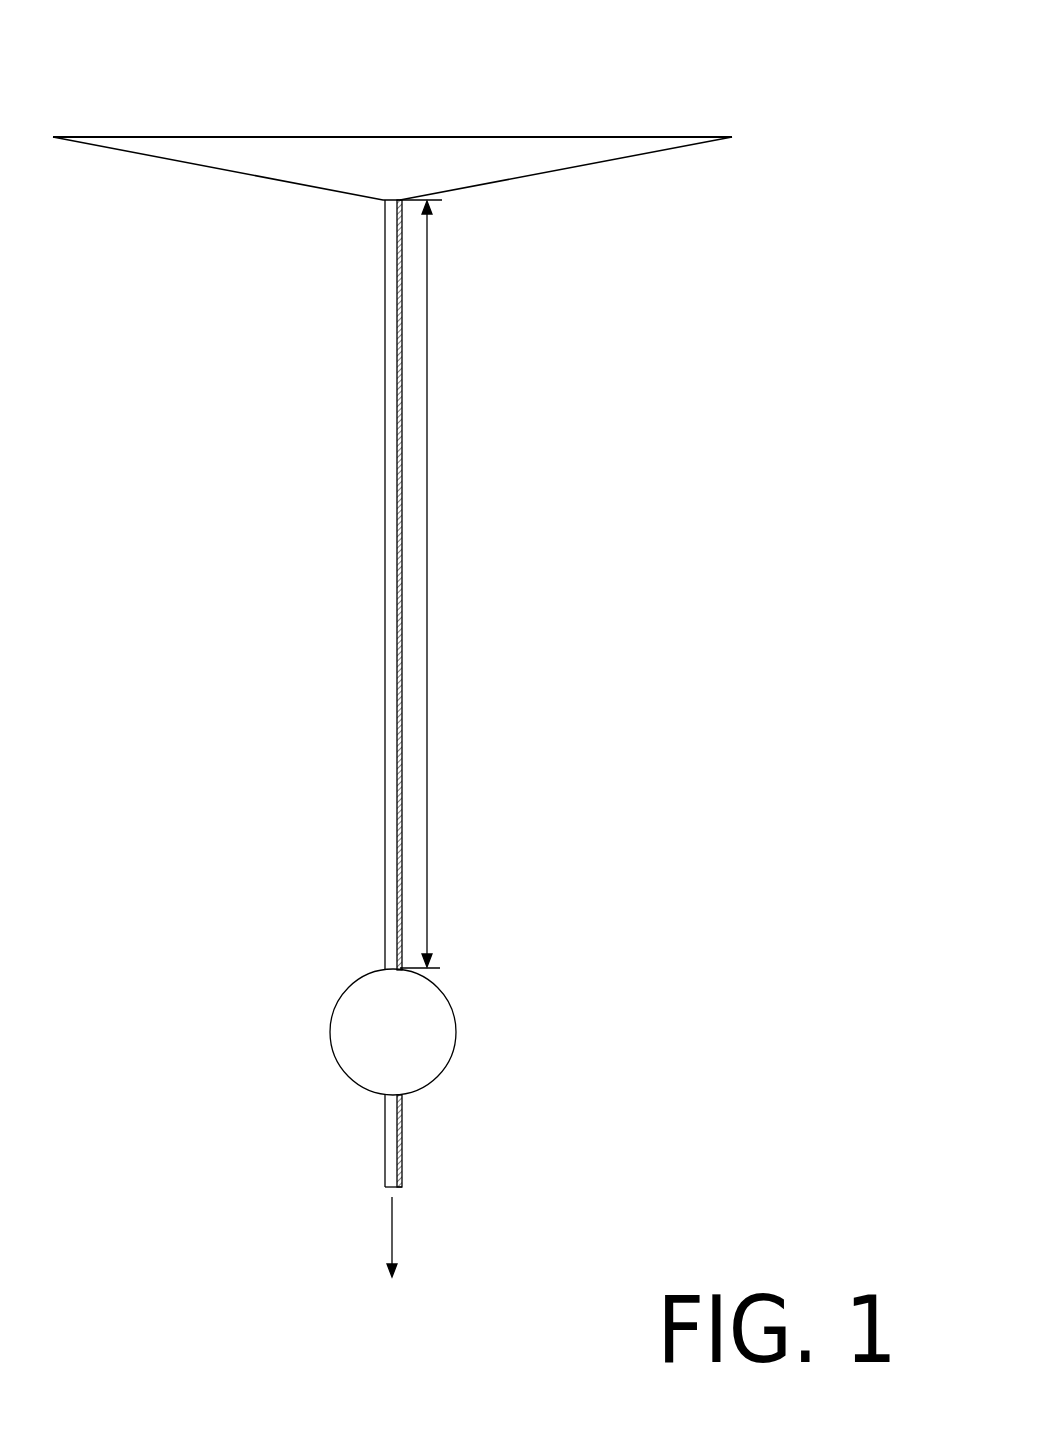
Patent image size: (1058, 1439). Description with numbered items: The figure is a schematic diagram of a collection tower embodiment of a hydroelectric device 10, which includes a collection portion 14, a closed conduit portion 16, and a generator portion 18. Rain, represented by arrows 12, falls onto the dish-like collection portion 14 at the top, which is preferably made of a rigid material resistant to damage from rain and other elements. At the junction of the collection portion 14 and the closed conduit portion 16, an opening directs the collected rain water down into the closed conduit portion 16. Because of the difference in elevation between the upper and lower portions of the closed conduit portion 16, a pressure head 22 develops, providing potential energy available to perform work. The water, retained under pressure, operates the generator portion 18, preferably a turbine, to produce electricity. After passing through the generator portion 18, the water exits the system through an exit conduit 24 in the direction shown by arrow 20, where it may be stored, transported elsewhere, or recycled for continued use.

The hydroelectric device 10 is at (694, 386).
The arrows 12 is at (61, 110).
The collection portion 14 is at (475, 187).
The closed conduit portion 16 is at (385, 587).
The generator portion 18 is at (393, 1032).
The arrow 20 is at (392, 1230).
The pressure head 22 is at (427, 554).
The exit conduit 24 is at (385, 1143).